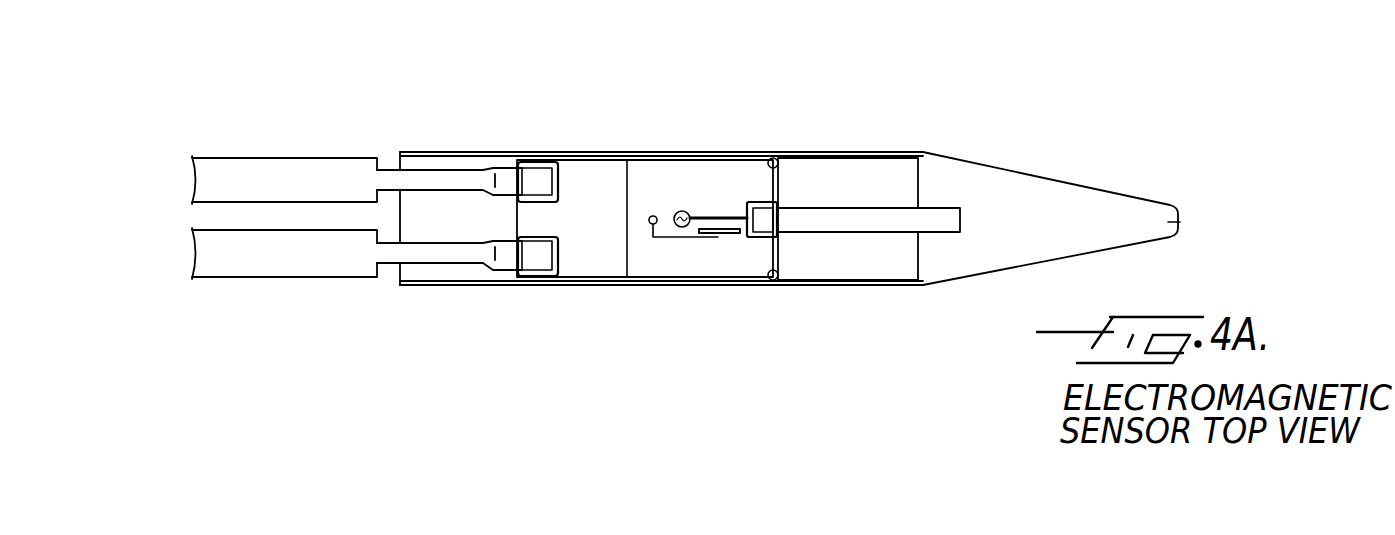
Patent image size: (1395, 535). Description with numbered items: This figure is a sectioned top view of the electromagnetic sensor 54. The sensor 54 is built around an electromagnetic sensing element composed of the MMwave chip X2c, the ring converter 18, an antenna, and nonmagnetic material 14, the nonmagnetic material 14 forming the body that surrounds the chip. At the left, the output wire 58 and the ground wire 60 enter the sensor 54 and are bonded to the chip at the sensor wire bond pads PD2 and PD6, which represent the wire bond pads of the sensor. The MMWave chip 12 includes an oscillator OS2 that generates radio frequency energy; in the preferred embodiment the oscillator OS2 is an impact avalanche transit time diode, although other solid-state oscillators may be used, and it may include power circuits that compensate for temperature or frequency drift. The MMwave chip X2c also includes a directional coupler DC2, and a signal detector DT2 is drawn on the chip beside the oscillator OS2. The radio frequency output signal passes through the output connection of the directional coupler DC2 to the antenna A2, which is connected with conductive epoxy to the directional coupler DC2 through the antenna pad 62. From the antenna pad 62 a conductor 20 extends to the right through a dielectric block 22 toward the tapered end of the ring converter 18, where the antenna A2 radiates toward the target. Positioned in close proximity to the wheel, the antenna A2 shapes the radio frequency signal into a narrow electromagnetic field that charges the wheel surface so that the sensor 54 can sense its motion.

The MMWave chip 12 is at (587, 247).
The nonmagnetic material 14 is at (423, 157).
The ring converter 18 is at (900, 153).
The antenna feed conductor 20 is at (845, 227).
The dielectric block 22 is at (918, 255).
The sensor 54 is at (284, 360).
The output wire 58 is at (490, 180).
The ground wire 60 is at (425, 256).
The antenna pad 62 is at (775, 198).
The sensor wire bond pad PD2 is at (557, 185).
The sensor wire bond pad PD6 is at (517, 272).
The signal detector DT2 is at (657, 215).
The oscillator OS2 is at (683, 211).
The directional coupler DC2 is at (728, 235).
The MMwave chip X2c is at (663, 253).
The antenna A2 is at (1378, 120).